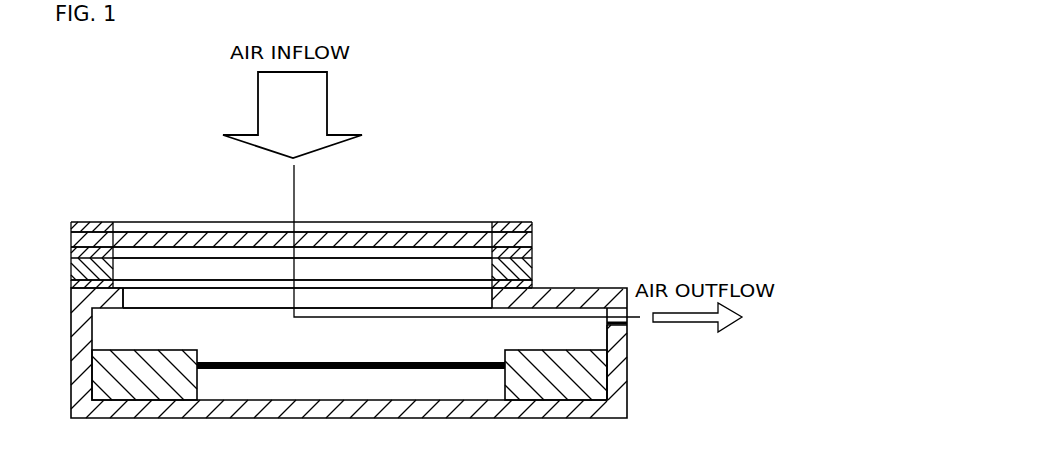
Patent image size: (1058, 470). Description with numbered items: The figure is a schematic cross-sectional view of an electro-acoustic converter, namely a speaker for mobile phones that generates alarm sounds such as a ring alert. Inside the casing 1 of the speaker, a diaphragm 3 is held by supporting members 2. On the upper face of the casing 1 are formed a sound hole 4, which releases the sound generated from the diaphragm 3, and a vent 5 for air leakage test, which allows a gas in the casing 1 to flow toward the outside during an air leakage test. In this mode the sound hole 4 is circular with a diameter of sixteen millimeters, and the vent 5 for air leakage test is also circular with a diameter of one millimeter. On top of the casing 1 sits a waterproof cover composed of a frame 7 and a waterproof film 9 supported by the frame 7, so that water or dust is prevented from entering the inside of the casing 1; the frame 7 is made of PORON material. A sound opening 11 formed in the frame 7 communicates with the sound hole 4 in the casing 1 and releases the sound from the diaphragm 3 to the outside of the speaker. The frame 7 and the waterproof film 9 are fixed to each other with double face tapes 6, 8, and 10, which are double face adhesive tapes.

The casing 1 is at (622, 390).
The supporting members 2 is at (547, 392).
The diaphragm 3 is at (400, 370).
The sound hole 4 is at (192, 303).
The vent for air leakage test 5 is at (625, 318).
The double face tape 6 is at (533, 282).
The frame 7 is at (533, 266).
The double face tape 8 is at (533, 248).
The waterproof film 9 is at (533, 231).
The double face tape 10 is at (513, 222).
The sound opening 11 is at (230, 268).